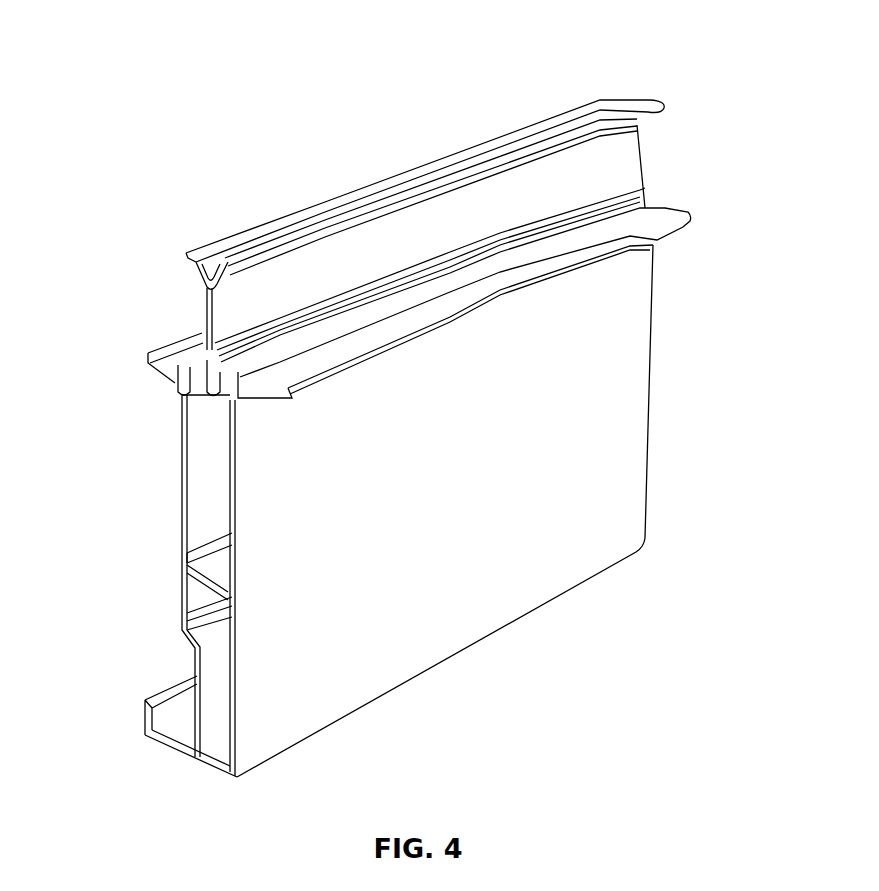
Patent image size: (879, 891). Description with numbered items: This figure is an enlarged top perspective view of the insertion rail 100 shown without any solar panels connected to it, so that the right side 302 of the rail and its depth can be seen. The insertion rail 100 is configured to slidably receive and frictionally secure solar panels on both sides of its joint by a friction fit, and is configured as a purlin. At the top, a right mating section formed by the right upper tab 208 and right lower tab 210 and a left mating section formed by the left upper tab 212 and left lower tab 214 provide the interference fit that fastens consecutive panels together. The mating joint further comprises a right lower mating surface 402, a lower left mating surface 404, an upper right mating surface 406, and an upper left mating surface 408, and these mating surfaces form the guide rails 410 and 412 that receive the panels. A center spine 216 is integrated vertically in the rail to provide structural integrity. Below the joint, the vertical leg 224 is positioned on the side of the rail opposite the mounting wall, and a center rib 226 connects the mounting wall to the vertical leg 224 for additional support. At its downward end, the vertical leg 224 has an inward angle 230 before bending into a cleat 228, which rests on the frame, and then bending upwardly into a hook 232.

The insertion rail 100 is at (216, 84).
The right upper tab 208 is at (228, 255).
The right lower tab 210 is at (297, 398).
The left upper tab 212 is at (183, 262).
The left lower tab 214 is at (160, 368).
The center spine 216 is at (197, 308).
The vertical leg 224 is at (183, 490).
The center rib 226 is at (185, 580).
The cleat 228 is at (178, 745).
The inward angle 230 is at (190, 628).
The hook 232 is at (153, 690).
The right side 302 is at (422, 487).
The right lower mating surface 402 is at (410, 323).
The lower left mating surface 404 is at (178, 345).
The upper right mating surface 406 is at (655, 128).
The upper left mating surface 408 is at (478, 143).
The guide rail 410 is at (733, 92).
The guide rail 412 is at (628, 97).